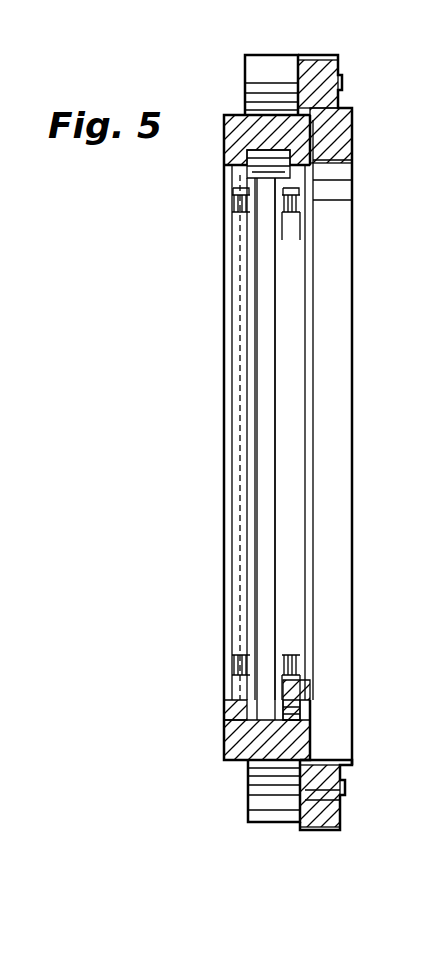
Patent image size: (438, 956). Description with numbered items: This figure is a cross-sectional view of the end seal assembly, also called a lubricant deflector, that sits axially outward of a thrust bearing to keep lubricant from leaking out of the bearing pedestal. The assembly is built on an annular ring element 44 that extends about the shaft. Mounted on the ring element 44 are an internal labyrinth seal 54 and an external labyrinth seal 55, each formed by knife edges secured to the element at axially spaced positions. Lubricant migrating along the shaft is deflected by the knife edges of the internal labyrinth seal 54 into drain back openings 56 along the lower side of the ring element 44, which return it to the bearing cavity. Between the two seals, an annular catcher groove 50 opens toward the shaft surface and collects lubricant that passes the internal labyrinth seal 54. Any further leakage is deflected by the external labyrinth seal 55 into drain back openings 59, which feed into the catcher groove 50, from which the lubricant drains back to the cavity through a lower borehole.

The ring element 44 is at (225, 475).
The catcher groove 50 is at (242, 163).
The internal labyrinth seal 54 is at (287, 215).
The external labyrinth seal 55 is at (230, 226).
The drain back openings 56 is at (292, 700).
The drain back openings 59 is at (236, 693).